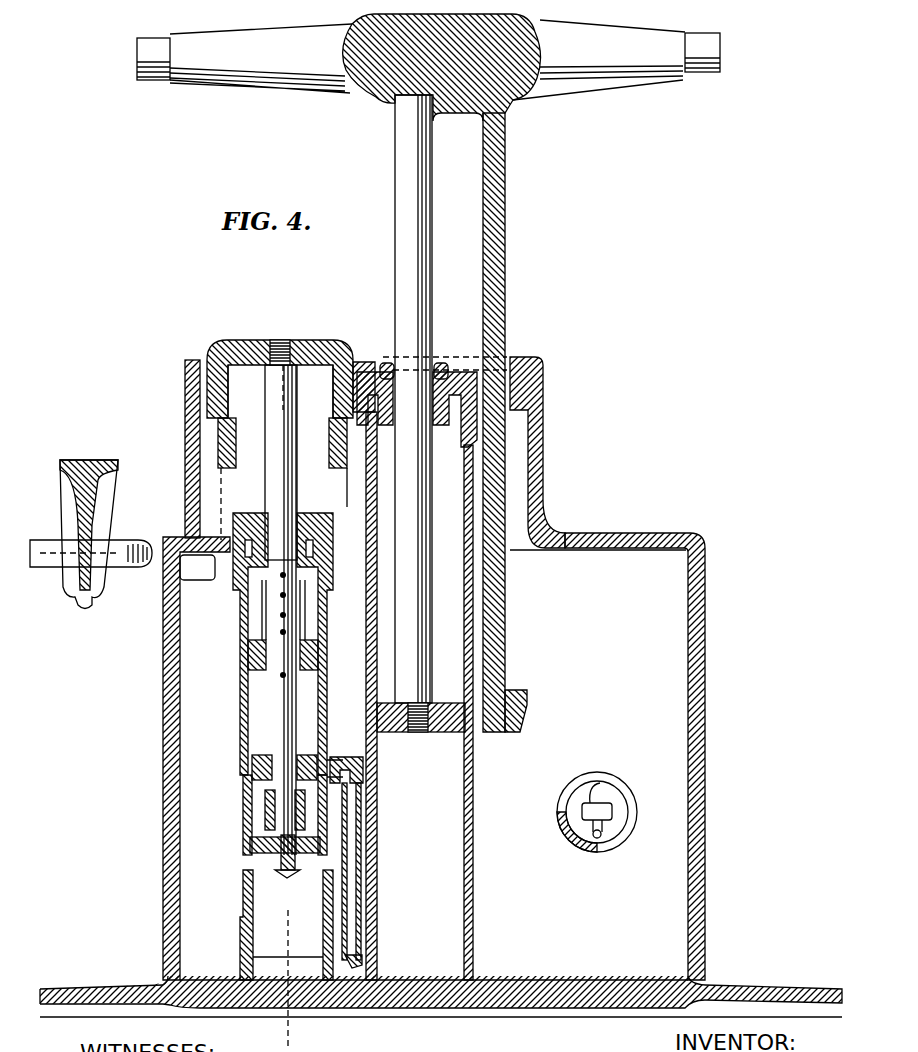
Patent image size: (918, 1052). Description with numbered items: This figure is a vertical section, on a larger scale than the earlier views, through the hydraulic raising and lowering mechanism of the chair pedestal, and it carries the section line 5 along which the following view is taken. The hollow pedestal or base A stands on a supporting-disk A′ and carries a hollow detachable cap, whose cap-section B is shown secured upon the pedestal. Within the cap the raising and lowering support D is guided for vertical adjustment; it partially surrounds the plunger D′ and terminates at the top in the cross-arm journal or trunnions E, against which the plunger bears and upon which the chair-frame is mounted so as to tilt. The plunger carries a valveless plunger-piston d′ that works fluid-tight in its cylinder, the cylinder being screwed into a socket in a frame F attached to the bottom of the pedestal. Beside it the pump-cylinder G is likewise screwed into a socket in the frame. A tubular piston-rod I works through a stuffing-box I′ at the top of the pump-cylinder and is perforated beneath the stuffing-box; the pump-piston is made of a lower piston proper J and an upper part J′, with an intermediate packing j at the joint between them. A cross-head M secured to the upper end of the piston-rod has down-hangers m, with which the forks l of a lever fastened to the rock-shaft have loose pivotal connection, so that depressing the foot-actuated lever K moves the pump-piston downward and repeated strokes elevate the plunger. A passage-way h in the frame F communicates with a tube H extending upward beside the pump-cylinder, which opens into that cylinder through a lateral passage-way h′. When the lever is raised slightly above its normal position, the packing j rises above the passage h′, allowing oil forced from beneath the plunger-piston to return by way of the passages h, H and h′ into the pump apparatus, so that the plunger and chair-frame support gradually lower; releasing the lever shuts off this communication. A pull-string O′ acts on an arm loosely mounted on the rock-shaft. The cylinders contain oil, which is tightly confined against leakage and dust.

The cross-arm journal or trunnions E is at (428, 73).
The plunger D′ is at (403, 258).
The raising and lowering support D is at (500, 243).
The plunger-piston d′ is at (403, 733).
The cap-section B is at (544, 472).
The hollow pedestal or base A is at (434, 756).
The supporting-disk A′ is at (441, 979).
The frame F is at (345, 985).
The cross-head M is at (322, 352).
The section line 5 is at (283, 340).
The down-hangers m is at (333, 392).
The forks l is at (329, 450).
The tubular piston-rod I is at (273, 483).
The stuffing-box I′ is at (317, 513).
The upper part of pump-piston J′ is at (243, 708).
The pump-cylinder G is at (243, 812).
The intermediate packing j is at (270, 772).
The piston proper J is at (252, 828).
The lateral passage-way h′ is at (350, 757).
The tube H is at (390, 940).
The passage-way h is at (352, 965).
The pull-string O′ is at (622, 822).
The foot-actuated lever K is at (91, 534).